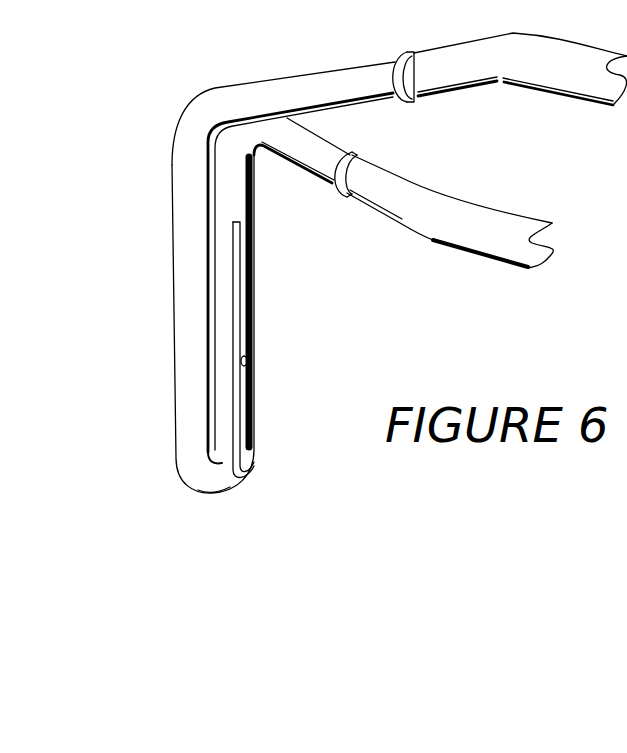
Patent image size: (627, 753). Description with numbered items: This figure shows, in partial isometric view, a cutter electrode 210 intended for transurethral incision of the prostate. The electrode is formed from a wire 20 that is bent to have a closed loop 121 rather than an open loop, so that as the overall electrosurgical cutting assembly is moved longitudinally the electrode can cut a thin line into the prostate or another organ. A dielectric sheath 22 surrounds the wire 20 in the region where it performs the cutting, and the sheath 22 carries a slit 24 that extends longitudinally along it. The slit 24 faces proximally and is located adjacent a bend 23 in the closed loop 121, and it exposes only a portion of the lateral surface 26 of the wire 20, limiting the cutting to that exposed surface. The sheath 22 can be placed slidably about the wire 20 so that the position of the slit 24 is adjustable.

The wire 20 is at (207, 489).
The sheath 22 is at (250, 244).
The bend 23 is at (226, 525).
The slit 24 is at (248, 362).
The lateral surface 26 is at (242, 413).
The closed loop 121 is at (296, 264).
The cutter electrode 210 is at (378, 309).